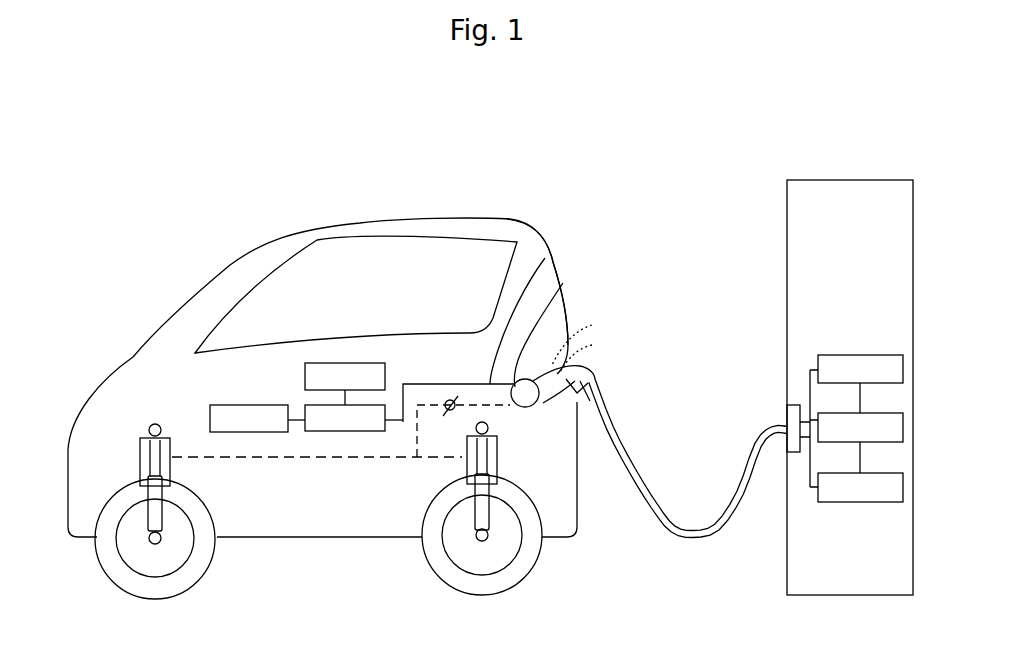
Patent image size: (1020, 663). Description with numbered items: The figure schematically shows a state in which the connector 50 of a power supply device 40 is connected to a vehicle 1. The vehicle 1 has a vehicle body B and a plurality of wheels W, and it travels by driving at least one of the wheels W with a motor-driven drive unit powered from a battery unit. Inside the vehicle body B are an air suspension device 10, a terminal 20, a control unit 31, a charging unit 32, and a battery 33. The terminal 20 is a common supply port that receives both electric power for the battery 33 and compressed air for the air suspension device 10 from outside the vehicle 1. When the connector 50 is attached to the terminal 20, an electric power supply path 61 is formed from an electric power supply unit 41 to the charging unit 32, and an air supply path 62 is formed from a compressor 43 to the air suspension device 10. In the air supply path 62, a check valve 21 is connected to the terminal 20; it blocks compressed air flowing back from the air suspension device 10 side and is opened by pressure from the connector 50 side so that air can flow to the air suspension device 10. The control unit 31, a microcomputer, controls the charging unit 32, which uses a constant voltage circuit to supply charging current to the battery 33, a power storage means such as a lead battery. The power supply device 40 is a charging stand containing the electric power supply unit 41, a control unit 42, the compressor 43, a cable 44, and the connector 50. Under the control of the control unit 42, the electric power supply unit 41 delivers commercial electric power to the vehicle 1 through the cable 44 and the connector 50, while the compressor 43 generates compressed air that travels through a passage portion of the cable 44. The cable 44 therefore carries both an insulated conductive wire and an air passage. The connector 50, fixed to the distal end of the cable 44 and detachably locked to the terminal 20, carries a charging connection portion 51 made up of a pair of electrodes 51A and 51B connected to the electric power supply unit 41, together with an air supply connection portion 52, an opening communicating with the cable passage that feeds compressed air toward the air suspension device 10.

The vehicle 1 is at (195, 182).
The vehicle body B is at (122, 387).
The air suspension device 10 is at (132, 467).
The terminal 20 is at (570, 307).
The check valve 21 is at (553, 258).
The control unit 31 is at (317, 360).
The charging unit 32 is at (290, 372).
The battery 33 is at (213, 400).
The power supply device 40 is at (855, 180).
The electric power supply unit 41 is at (903, 366).
The control unit 42 is at (903, 426).
The compressor 43 is at (903, 487).
The cable 44 is at (628, 463).
The connector 50 is at (597, 379).
The charging connection portion 51 is at (613, 342).
The electrode 51A is at (592, 325).
The electrode 51B is at (592, 345).
The air supply connection portion 52 is at (538, 410).
The electric power supply path 61 is at (560, 288).
The air supply path 62 is at (343, 460).
The wheels W is at (110, 580).